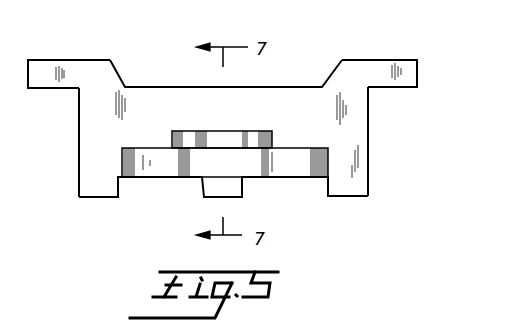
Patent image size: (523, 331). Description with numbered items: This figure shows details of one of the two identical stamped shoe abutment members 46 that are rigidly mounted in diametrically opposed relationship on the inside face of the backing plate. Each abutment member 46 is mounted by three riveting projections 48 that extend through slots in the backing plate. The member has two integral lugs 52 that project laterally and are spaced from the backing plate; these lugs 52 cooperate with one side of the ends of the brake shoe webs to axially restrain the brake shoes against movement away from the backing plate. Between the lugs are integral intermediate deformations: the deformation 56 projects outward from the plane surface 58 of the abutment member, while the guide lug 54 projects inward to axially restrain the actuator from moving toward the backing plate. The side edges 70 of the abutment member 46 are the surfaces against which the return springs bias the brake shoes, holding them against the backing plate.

The shoe abutment member 46 is at (231, 125).
The riveting projections 48 is at (92, 190).
The lugs 52 is at (35, 88).
The guide lug 54 is at (223, 139).
The deformation 56 is at (252, 167).
The plane surface 58 is at (156, 105).
The side edges 70 is at (79, 130).